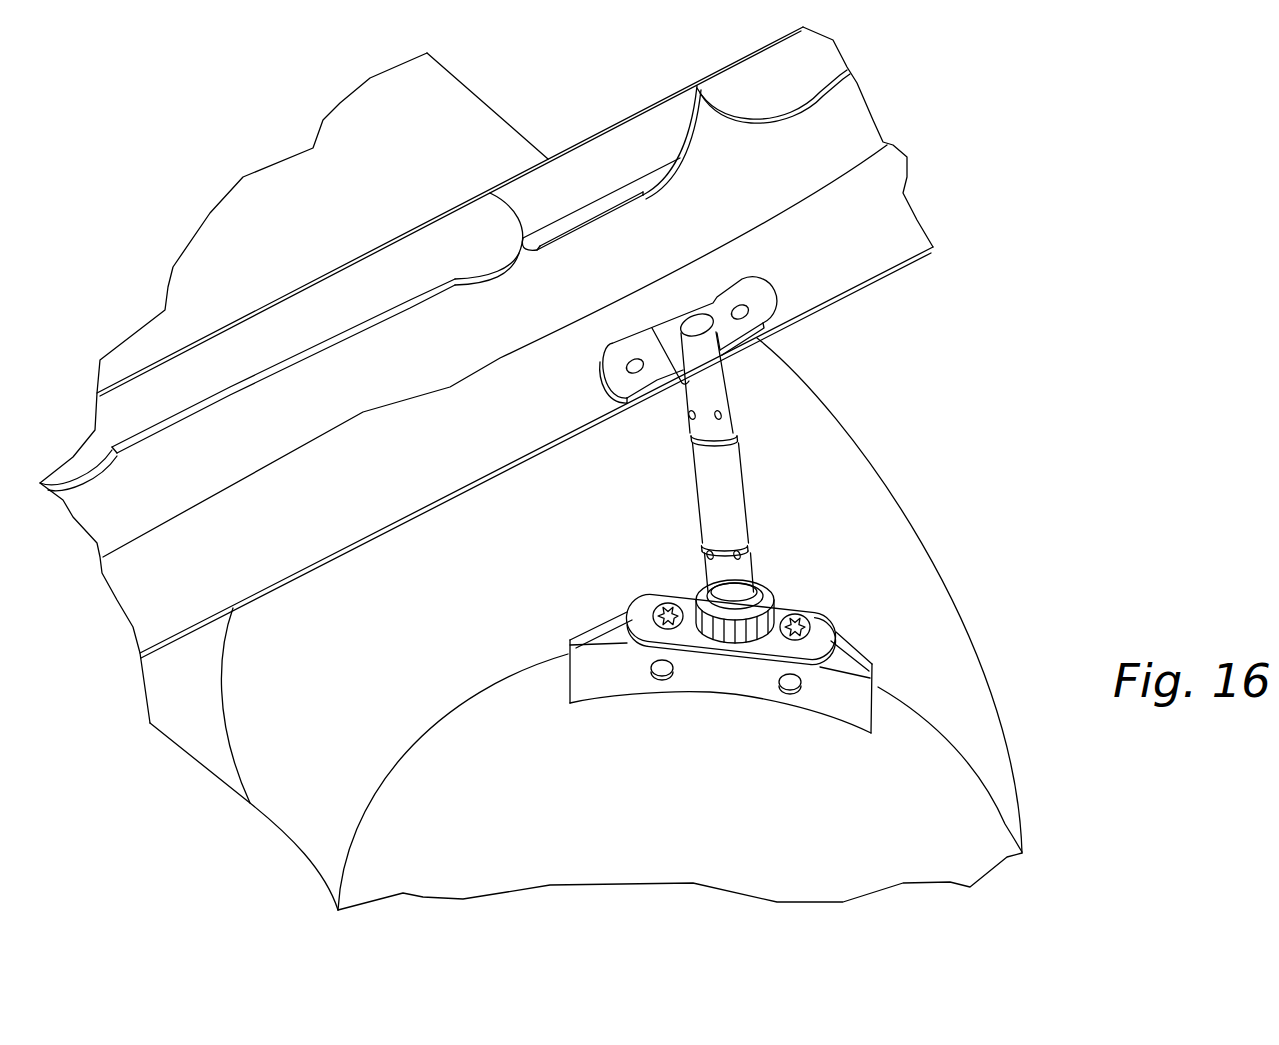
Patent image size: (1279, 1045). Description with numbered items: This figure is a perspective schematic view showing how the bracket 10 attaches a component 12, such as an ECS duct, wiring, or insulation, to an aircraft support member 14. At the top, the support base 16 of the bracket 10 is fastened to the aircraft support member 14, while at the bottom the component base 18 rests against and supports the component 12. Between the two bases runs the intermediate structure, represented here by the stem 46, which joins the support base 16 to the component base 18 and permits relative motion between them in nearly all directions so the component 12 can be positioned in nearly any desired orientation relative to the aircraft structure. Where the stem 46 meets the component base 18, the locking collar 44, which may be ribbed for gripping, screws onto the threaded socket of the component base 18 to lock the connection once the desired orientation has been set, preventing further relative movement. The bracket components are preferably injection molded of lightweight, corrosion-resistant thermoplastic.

The bracket 10 is at (810, 446).
The component 12 is at (952, 636).
The aircraft support member 14 is at (897, 232).
The support base 16 is at (772, 300).
The component base 18 is at (636, 590).
The locking collar 44 is at (768, 580).
The stem 46 is at (688, 482).